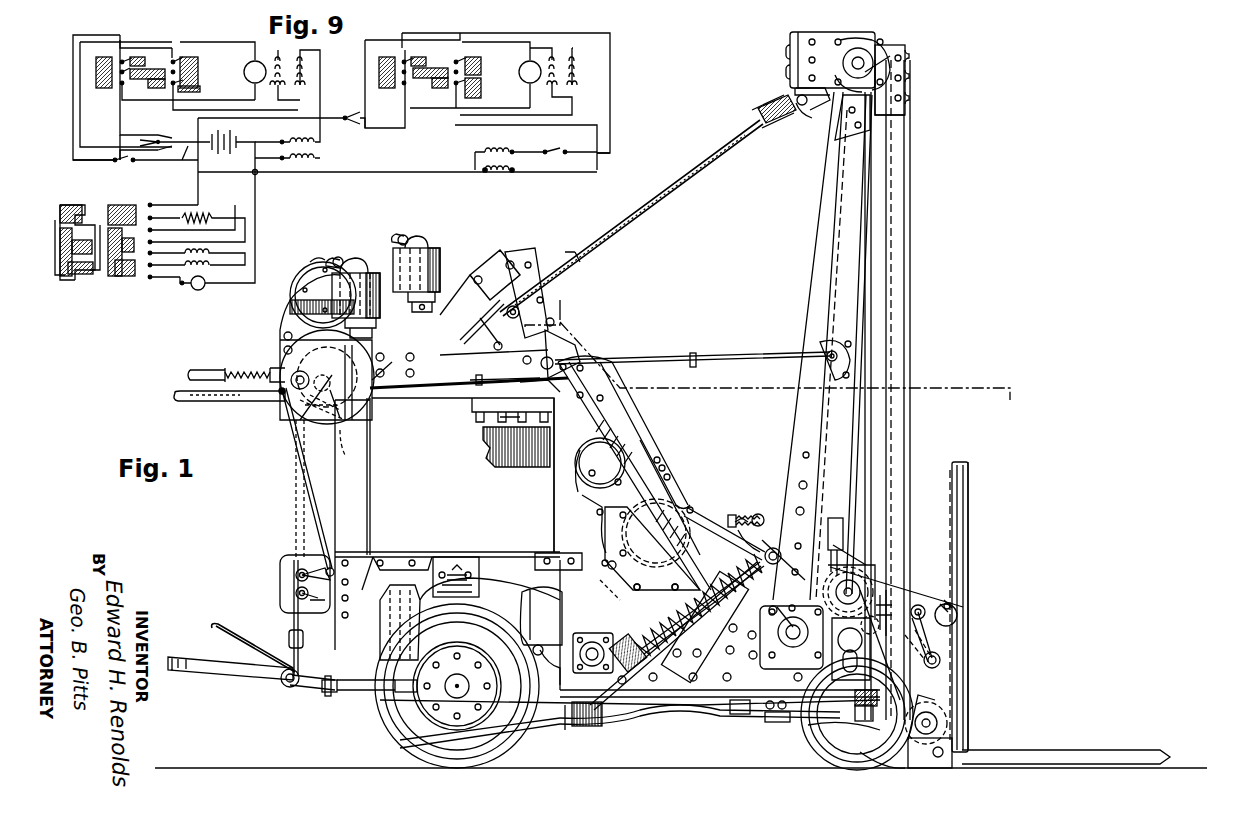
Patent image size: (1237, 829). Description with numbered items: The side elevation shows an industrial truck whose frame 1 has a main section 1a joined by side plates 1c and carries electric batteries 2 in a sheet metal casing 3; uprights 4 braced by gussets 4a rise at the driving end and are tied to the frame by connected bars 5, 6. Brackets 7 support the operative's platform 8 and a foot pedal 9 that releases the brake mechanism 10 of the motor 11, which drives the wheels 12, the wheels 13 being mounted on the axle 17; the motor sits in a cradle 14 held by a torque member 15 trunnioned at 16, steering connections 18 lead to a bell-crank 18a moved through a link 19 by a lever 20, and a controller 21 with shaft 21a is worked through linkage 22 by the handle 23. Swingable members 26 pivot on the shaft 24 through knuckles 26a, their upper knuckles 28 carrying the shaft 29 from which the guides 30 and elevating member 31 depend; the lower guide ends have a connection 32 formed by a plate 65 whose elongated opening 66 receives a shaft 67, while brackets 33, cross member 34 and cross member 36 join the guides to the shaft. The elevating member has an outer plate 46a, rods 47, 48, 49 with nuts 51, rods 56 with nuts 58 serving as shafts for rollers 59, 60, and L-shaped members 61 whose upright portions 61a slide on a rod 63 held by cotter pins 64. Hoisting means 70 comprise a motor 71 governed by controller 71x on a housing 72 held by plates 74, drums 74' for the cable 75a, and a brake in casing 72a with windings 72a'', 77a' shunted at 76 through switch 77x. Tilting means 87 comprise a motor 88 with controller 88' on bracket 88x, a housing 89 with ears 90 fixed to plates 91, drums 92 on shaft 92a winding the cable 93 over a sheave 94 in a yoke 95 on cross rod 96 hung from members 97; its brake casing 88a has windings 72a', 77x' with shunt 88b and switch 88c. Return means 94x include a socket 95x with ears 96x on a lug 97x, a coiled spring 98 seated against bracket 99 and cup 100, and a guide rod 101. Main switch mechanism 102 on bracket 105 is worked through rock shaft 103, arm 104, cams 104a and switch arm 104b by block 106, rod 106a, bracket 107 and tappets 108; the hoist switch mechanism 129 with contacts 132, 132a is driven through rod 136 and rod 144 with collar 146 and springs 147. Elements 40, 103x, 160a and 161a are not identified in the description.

In FIG. 1, the frame 1 is at (650, 627).
In FIG. 1, the main section 1a is at (446, 536).
In FIG. 1, the side plates 1c is at (698, 724).
In FIG. 9, the electric batteries 2 is at (232, 130).
In FIG. 1, the electric batteries 2 is at (495, 462).
In FIG. 1, the sheet metal casing 3 is at (554, 492).
In FIG. 1, the uprights 4 is at (370, 492).
In FIG. 1, the gussets 4a is at (390, 554).
In FIG. 1, the bar 5 is at (440, 386).
In FIG. 1, the bar 6 is at (608, 414).
In FIG. 1, the brackets 7 is at (300, 690).
In FIG. 1, the operative's platform 8 is at (222, 670).
In FIG. 1, the foot pedal 9 is at (245, 636).
In FIG. 1, the brake mechanism 10 is at (376, 643).
In FIG. 9, the motor 11 is at (192, 292).
In FIG. 1, the motor 11 is at (541, 616).
In FIG. 1, the wheels 12 is at (398, 740).
In FIG. 1, the wheels 13 is at (830, 765).
In FIG. 1, the cradle 14 is at (568, 608).
In FIG. 1, the torque member 15 is at (608, 714).
In FIG. 1, the trunnion 16 is at (592, 628).
In FIG. 1, the axle 17 is at (815, 742).
In FIG. 1, the connections 18 is at (580, 738).
In FIG. 1, the bell-crank 18a is at (356, 694).
In FIG. 1, the link 19 is at (286, 636).
In FIG. 1, the lever 20 is at (188, 406).
In FIG. 9, the controller 21 is at (150, 252).
In FIG. 1, the controller 21 is at (280, 567).
In FIG. 1, the shaft 21a is at (285, 592).
In FIG. 1, the linkage 22 is at (280, 432).
In FIG. 1, the operating handle 23 is at (218, 366).
In FIG. 1, the shaft 24 is at (782, 668).
In FIG. 1, the members 26 is at (822, 238).
In FIG. 1, the knuckle 26a is at (796, 678).
In FIG. 1, the knuckles 28 is at (890, 46).
In FIG. 1, the shaft 29 is at (858, 48).
In FIG. 1, the guide frame 30 is at (905, 250).
In FIG. 1, the elevating member 31 is at (976, 607).
In FIG. 1, the connection 32 is at (880, 645).
In FIG. 1, the brackets 33 is at (828, 36).
In FIG. 1, the cross member 34 is at (786, 50).
In FIG. 1, the cross member 36 is at (912, 68).
In FIG. 1, the plate lug 40 is at (912, 100).
In FIG. 1, the outer plate 46a is at (900, 590).
In FIG. 1, the rod 47 is at (936, 586).
In FIG. 1, the rod 48 is at (942, 656).
In FIG. 1, the rod 49 is at (932, 770).
In FIG. 1, the nuts 51 is at (920, 672).
In FIG. 1, the rods 56 is at (858, 560).
In FIG. 1, the nuts 58 is at (936, 710).
In FIG. 1, the roller 59 is at (845, 548).
In FIG. 1, the roller 60 is at (906, 772).
In FIG. 1, the L-shaped members 61 is at (1024, 758).
In FIG. 1, the upright portions 61a is at (968, 580).
In FIG. 1, the rod 63 is at (958, 612).
In FIG. 1, the cotter pins 64 is at (952, 604).
In FIG. 1, the plate 65 is at (878, 700).
In FIG. 1, the elongated opening 66 is at (878, 612).
In FIG. 1, the shaft 67 is at (851, 649).
In FIG. 1, the raising and lowering means 70 is at (562, 549).
In FIG. 9, the motor 71 is at (518, 78).
In FIG. 1, the motor 71 is at (578, 440).
In FIG. 9, the controller 71x is at (487, 84).
In FIG. 1, the controller 71x is at (380, 256).
In FIG. 1, the housing 72 is at (588, 500).
In FIG. 1, the casing 72a is at (670, 490).
In FIG. 9, the winding 72a' is at (494, 173).
In FIG. 9, the winding 72a'' is at (308, 134).
In FIG. 1, the plates 74 is at (641, 548).
In FIG. 1, the drums 74' is at (601, 591).
In FIG. 1, the cable 75a is at (830, 145).
In FIG. 9, the shunt 76 is at (612, 105).
In FIG. 9, the winding 77a' is at (536, 141).
In FIG. 9, the switch 77x is at (556, 140).
In FIG. 9, the winding 77x' is at (300, 163).
In FIG. 1, the tilting means 87 is at (577, 245).
In FIG. 9, the motor 88 is at (250, 80).
In FIG. 1, the motor 88 is at (307, 257).
In FIG. 9, the controller 88' is at (185, 89).
In FIG. 1, the controller 88' is at (432, 272).
In FIG. 1, the casing 88a is at (298, 288).
In FIG. 9, the shunt 88b is at (266, 176).
In FIG. 9, the switch 88c is at (135, 170).
In FIG. 1, the switch 88c is at (490, 346).
In FIG. 1, the bracket 88x is at (468, 340).
In FIG. 1, the housing 89 is at (285, 310).
In FIG. 1, the projecting ears 90 is at (320, 418).
In FIG. 1, the plates 91 is at (362, 418).
In FIG. 1, the drums 92 is at (388, 345).
In FIG. 1, the shaft 92a is at (394, 358).
In FIG. 1, the cable 93 is at (620, 228).
In FIG. 1, the sheave 94 is at (752, 135).
In FIG. 1, the arresting and return means 94x is at (668, 610).
In FIG. 1, the strap or yoke 95 is at (768, 100).
In FIG. 1, the socket 95x is at (712, 572).
In FIG. 1, the cross rod 96 is at (805, 118).
In FIG. 1, the ears 96x is at (745, 534).
In FIG. 1, the depending members 97 is at (820, 104).
In FIG. 1, the lug 97x is at (782, 530).
In FIG. 1, the coiled spring 98 is at (700, 628).
In FIG. 1, the bracket 99 is at (626, 722).
In FIG. 1, the cup member 100 is at (622, 632).
In FIG. 1, the rod 101 is at (712, 650).
In FIG. 9, the main switch mechanism 102 is at (178, 145).
In FIG. 1, the main switch mechanism 102 is at (480, 262).
In FIG. 1, the rock shaft 103 is at (540, 288).
In FIG. 1, the link 103x is at (476, 322).
In FIG. 1, the arm 104 is at (572, 346).
In FIG. 1, the cams 104a is at (522, 370).
In FIG. 1, the switch arm 104b is at (494, 356).
In FIG. 1, the bracket 105 is at (530, 246).
In FIG. 1, the block 106 is at (540, 387).
In FIG. 1, the rod 106a is at (752, 342).
In FIG. 1, the bracket 107 is at (818, 338).
In FIG. 1, the tappets 108 is at (593, 365).
In FIG. 9, the main switch mechanism 129 is at (342, 111).
In FIG. 9, the movable contact 132 is at (145, 137).
In FIG. 9, the contact 132a is at (156, 106).
In FIG. 1, the rod 136 is at (838, 518).
In FIG. 1, the rod 144 is at (732, 516).
In FIG. 1, the collar 146 is at (753, 505).
In FIG. 1, the compression spring 147 is at (770, 520).
In FIG. 9, the lead 160a is at (175, 167).
In FIG. 9, the lead 161a is at (139, 137).